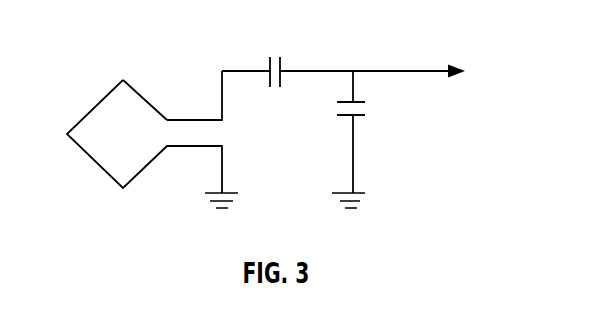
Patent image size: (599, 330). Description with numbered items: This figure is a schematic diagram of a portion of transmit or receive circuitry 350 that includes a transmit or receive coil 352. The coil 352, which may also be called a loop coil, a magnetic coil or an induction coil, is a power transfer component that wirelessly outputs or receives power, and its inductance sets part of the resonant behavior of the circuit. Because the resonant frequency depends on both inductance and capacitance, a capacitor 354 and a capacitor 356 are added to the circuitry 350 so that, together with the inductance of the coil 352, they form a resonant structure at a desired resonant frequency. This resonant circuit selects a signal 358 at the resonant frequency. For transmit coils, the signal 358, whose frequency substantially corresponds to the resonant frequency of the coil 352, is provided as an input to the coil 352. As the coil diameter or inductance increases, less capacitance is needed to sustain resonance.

The transmit or receive circuitry 350 is at (147, 46).
The coil 352 is at (95, 107).
The capacitor 354 is at (283, 67).
The capacitor 356 is at (355, 117).
The signal 358 is at (385, 70).